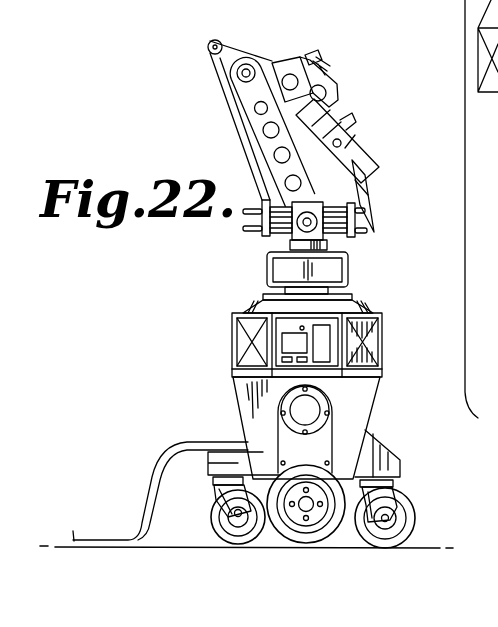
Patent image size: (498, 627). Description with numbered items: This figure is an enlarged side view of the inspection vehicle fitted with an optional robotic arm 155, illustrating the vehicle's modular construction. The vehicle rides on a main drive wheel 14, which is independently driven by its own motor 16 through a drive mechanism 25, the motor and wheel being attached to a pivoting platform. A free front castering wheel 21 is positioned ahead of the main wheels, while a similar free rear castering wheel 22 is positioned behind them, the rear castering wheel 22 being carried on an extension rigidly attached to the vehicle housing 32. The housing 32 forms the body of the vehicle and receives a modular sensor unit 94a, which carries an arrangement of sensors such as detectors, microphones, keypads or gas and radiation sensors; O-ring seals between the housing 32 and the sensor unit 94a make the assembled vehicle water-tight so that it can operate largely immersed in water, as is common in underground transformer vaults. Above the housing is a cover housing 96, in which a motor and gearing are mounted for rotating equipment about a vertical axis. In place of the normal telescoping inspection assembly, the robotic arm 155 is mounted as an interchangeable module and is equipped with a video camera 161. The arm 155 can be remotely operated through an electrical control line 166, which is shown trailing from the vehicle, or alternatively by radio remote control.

The main drive wheel 14 is at (307, 434).
The motor 16 is at (322, 402).
The front castering wheel 21 is at (217, 515).
The rear castering wheel 22 is at (408, 517).
The drive mechanism 25 is at (333, 444).
The vehicle housing 32 is at (245, 402).
The sensor unit 94a is at (378, 316).
The cover housing 96 is at (260, 307).
The robotic arm 155 is at (242, 141).
The video camera 161 is at (326, 69).
The control line 166 is at (117, 532).